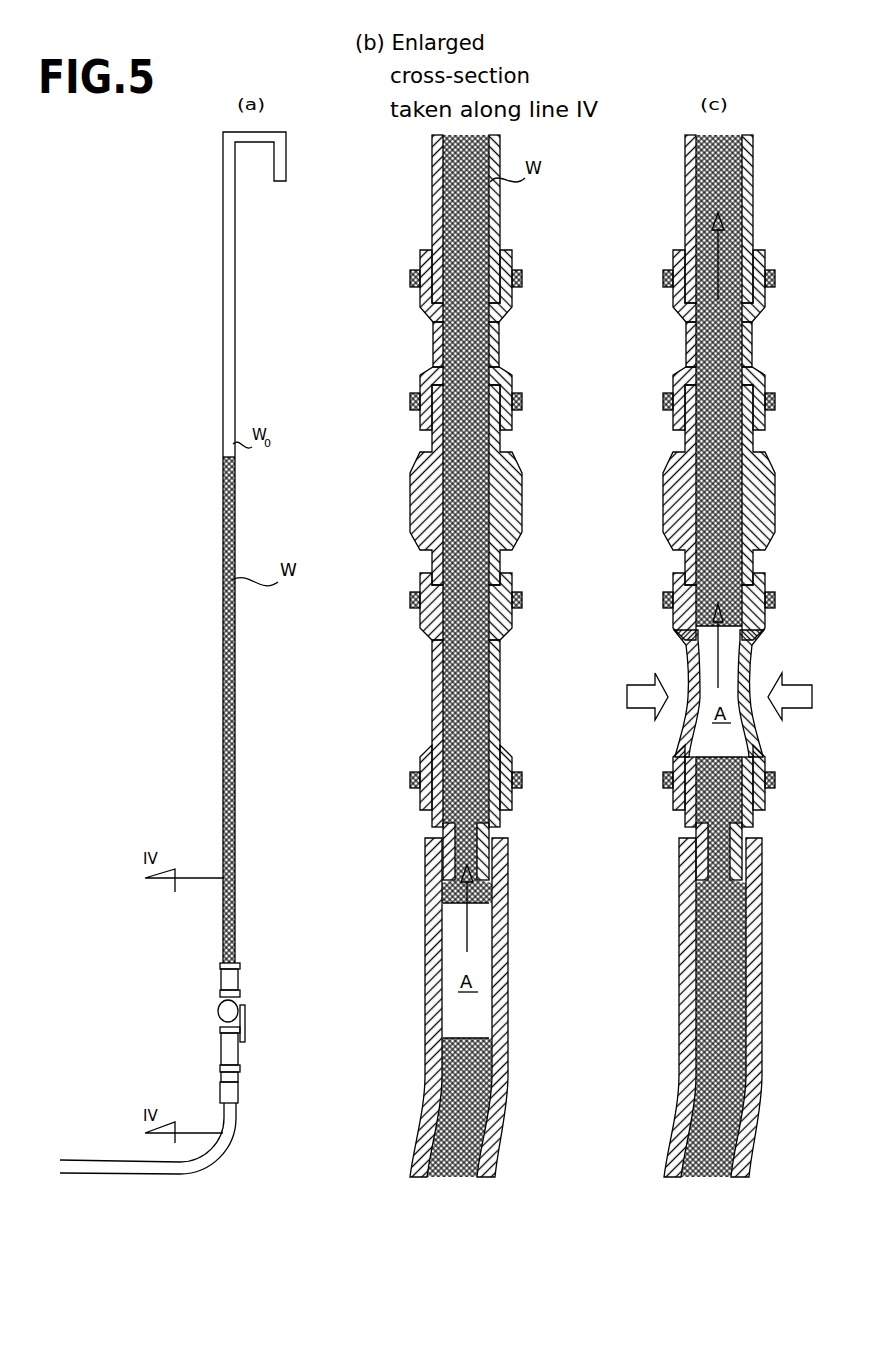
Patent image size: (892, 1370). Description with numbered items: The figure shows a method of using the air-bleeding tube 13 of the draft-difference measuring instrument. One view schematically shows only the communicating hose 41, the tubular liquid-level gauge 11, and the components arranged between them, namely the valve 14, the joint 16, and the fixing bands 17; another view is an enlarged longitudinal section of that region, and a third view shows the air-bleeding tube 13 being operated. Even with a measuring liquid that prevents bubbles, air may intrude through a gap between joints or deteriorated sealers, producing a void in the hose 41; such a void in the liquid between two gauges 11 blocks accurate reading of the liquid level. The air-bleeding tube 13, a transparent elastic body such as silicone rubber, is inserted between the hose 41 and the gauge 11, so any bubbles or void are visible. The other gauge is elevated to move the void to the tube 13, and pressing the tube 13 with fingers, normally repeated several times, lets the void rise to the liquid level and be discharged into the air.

The tubular liquid-level gauge 11 is at (231, 360).
The air-bleeding tube 13 is at (228, 1050).
The valve 14 is at (222, 1010).
The joint 16 is at (430, 850).
The fixing band 17 is at (410, 598).
The communicating hose 41 is at (117, 1162).